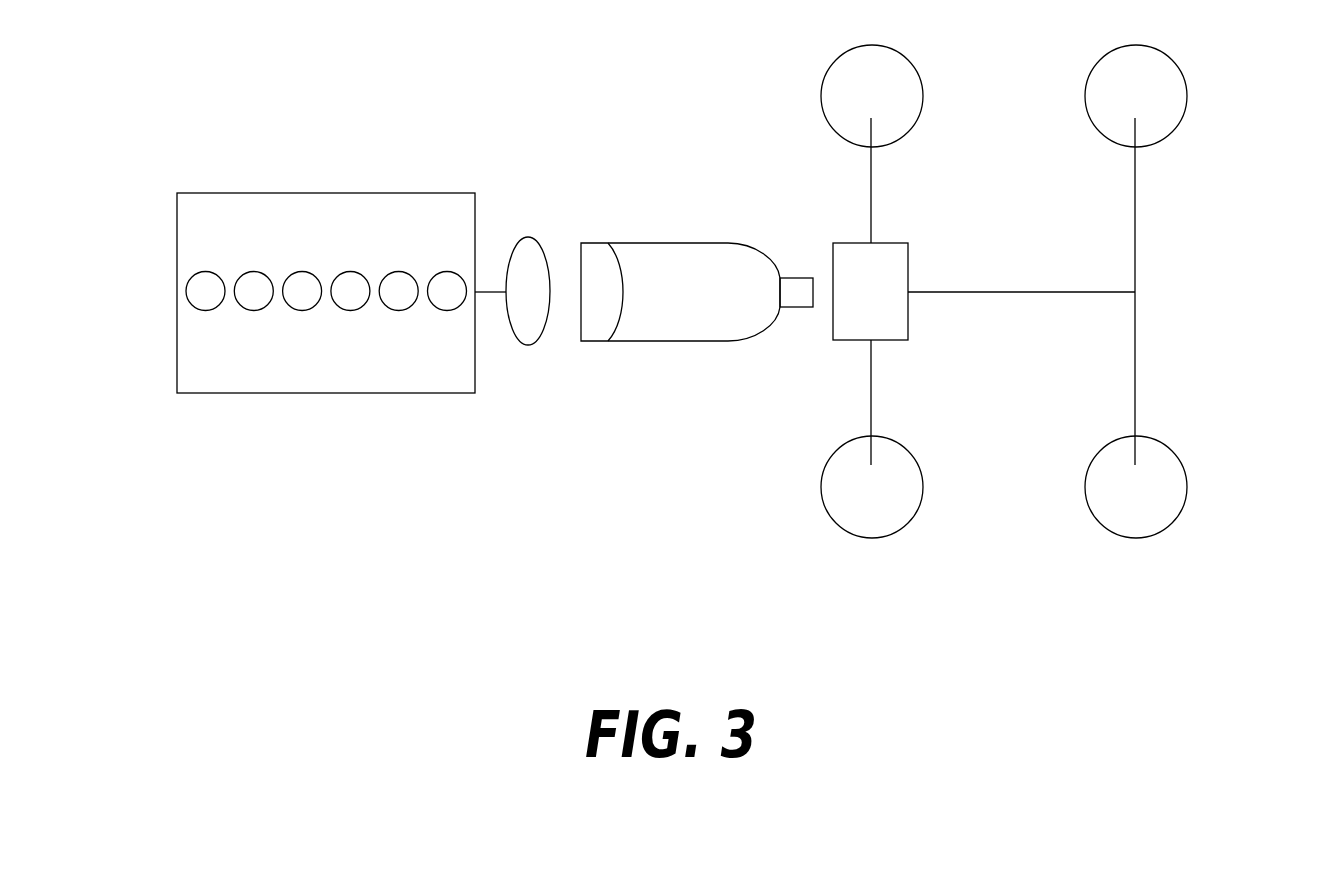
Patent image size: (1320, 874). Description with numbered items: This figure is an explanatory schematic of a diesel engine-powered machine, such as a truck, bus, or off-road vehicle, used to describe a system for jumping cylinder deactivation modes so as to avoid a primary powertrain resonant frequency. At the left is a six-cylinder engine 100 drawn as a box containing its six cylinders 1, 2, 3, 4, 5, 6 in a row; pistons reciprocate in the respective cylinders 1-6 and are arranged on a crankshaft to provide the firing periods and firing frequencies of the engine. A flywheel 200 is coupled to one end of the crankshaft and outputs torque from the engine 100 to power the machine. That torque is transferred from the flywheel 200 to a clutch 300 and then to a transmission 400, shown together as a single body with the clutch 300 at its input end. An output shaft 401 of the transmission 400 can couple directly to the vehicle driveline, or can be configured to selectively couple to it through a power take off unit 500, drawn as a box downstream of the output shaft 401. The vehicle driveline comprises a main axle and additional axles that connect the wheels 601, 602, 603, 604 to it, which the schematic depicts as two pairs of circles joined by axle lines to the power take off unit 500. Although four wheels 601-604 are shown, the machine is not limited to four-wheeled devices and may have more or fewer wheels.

The engine 100 is at (443, 193).
The cylinder 1 is at (211, 305).
The cylinder 2 is at (259, 305).
The cylinder 3 is at (307, 305).
The cylinder 4 is at (355, 305).
The cylinder 5 is at (404, 305).
The cylinder 6 is at (452, 305).
The flywheel 200 is at (530, 345).
The clutch 300 is at (590, 243).
The transmission 400 is at (703, 341).
The output shaft 401 is at (792, 278).
The power take off unit 500 is at (908, 262).
The wheel 601 is at (912, 62).
The wheel 602 is at (1176, 62).
The wheel 603 is at (912, 450).
The wheel 604 is at (1176, 450).